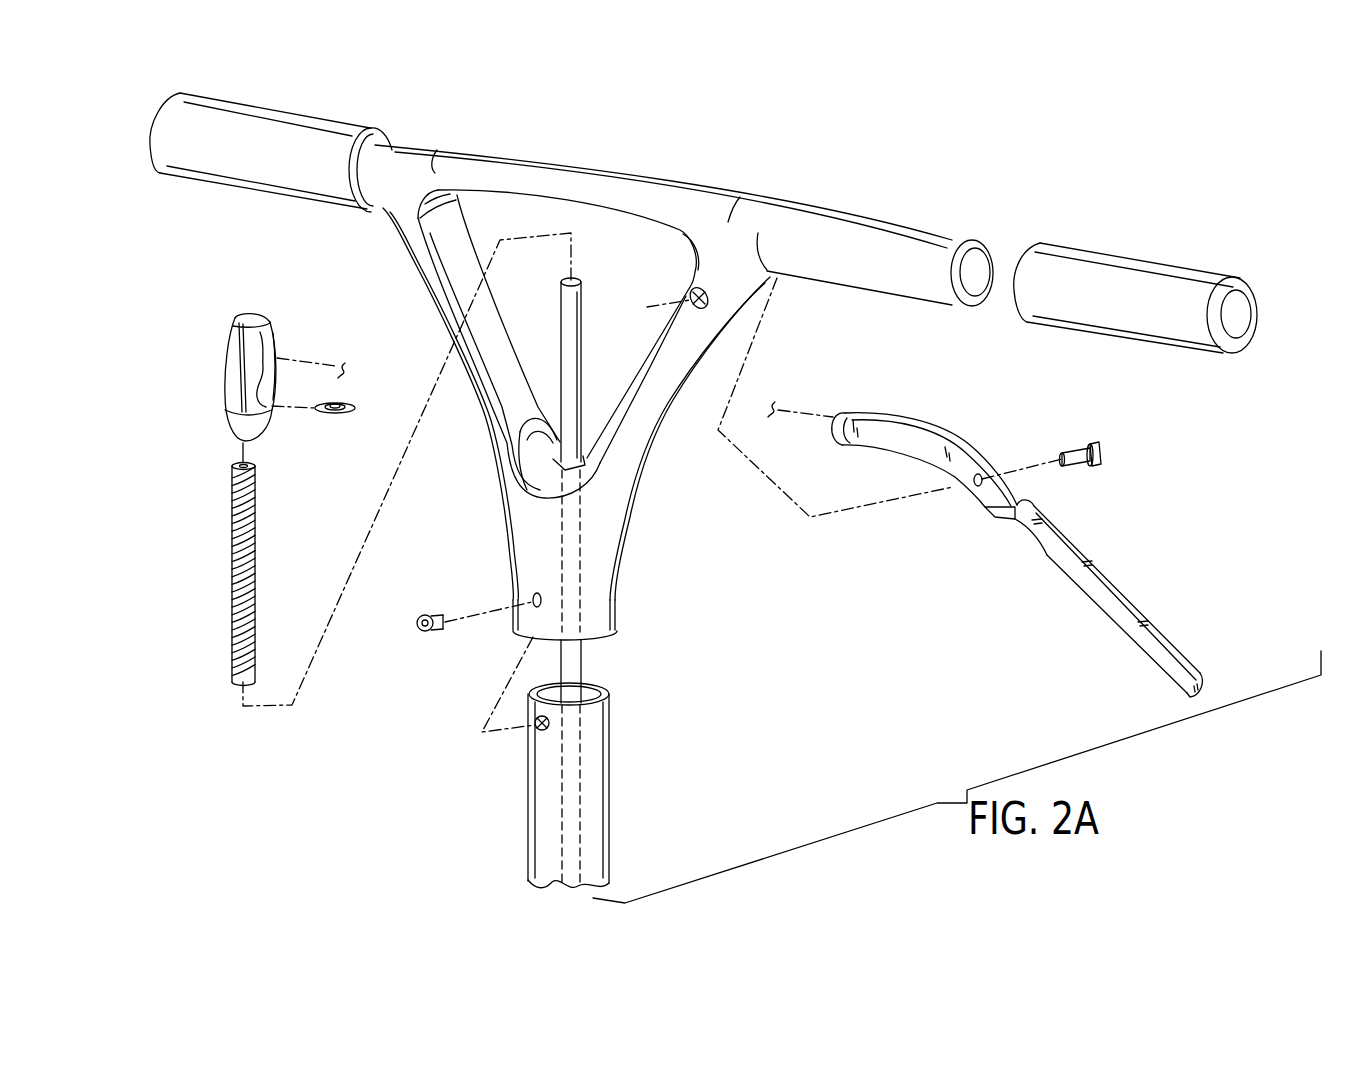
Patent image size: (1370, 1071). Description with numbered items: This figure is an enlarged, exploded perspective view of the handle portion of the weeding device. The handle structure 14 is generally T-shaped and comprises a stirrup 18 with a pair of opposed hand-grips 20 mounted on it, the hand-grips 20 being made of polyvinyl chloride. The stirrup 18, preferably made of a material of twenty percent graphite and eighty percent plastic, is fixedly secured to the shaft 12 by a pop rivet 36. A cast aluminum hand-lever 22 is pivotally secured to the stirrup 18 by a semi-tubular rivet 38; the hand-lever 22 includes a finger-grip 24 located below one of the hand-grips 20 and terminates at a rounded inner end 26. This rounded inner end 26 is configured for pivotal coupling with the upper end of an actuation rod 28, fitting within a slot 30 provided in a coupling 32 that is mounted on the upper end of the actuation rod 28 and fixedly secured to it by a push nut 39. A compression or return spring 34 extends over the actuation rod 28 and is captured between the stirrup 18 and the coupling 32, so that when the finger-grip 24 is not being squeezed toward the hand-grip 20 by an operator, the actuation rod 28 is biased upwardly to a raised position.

The shaft 12 is at (615, 790).
The handle structure 14 is at (696, 178).
The stirrup 18 is at (620, 563).
The hand-grips 20 is at (290, 110).
The hand-lever 22 is at (992, 545).
The finger-grip 24 is at (1113, 622).
The rounded inner end 26 is at (835, 438).
The actuation rod 28 is at (585, 312).
The slot 30 is at (271, 322).
The coupling 32 is at (255, 367).
The return spring 34 is at (228, 563).
The pop rivet 36 is at (1103, 450).
The semi-tubular rivet 38 is at (423, 635).
The push nut 39 is at (337, 413).